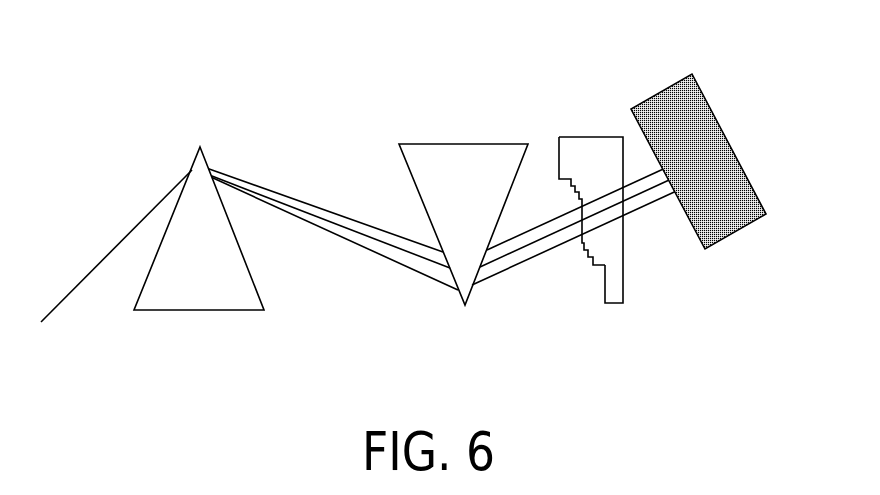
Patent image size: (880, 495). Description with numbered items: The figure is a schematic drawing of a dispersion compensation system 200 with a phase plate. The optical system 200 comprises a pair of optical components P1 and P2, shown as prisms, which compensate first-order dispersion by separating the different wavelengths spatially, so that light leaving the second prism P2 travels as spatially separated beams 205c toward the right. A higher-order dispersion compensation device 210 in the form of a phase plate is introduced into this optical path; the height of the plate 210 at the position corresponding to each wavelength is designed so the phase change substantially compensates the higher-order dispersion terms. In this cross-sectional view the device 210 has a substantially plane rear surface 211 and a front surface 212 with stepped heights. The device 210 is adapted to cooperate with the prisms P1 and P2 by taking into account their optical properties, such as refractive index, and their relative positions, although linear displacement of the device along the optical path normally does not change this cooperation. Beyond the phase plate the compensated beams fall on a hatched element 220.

The dispersion compensation system 200 is at (149, 75).
The first optical component P1 is at (203, 302).
The second optical component P2 is at (458, 157).
The dispersed light beams 205c is at (536, 258).
The higher-order dispersion compensation device 210 is at (614, 192).
The rear surface 211 is at (620, 168).
The front surface 212 is at (580, 178).
The detector 220 is at (745, 215).